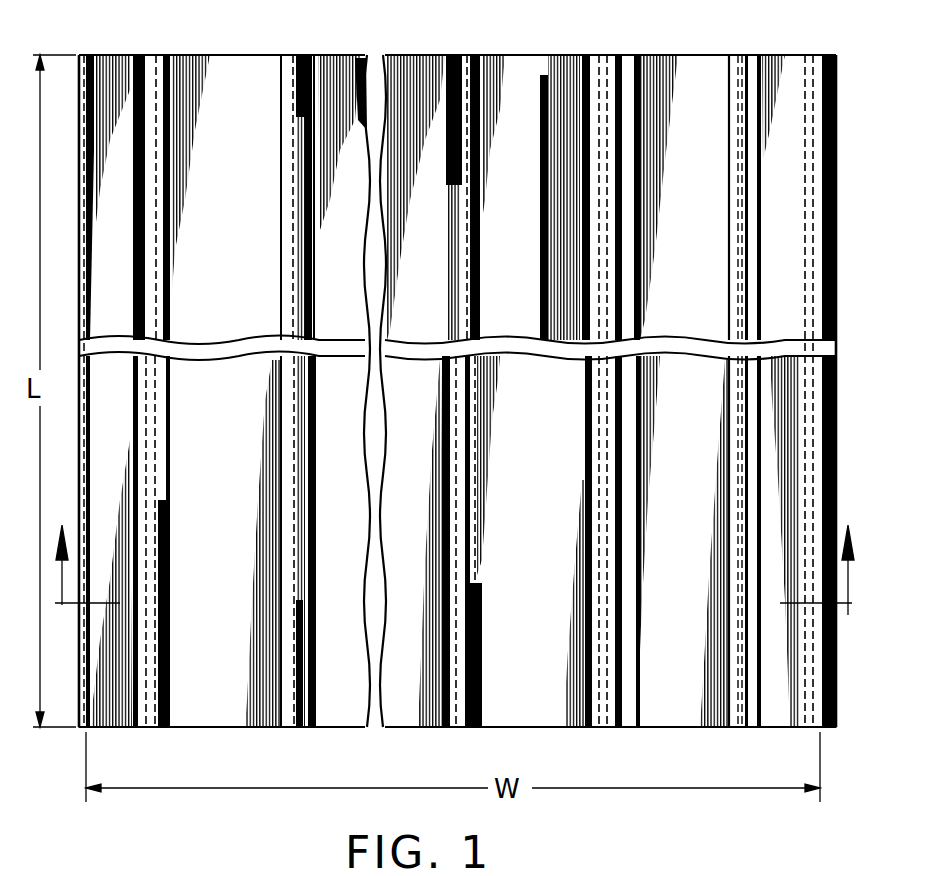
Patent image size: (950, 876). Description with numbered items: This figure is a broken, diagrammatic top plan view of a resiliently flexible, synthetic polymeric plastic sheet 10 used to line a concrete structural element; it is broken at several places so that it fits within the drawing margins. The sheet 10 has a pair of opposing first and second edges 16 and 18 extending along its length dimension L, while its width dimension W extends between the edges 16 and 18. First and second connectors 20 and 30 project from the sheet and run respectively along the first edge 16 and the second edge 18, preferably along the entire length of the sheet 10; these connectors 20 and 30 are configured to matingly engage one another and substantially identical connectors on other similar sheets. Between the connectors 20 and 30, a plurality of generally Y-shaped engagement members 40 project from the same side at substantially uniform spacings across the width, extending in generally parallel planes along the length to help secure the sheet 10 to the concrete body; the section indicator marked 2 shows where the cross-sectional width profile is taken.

The synthetic polymeric plastic sheet 10 is at (411, 38).
The first edge 16 is at (816, 53).
The second edge 18 is at (79, 54).
The first connector 20 is at (814, 730).
The second connector 30 is at (86, 730).
The Y-shaped engagement member 40 is at (158, 55).
The section line for FIG. 2 is at (451, 555).